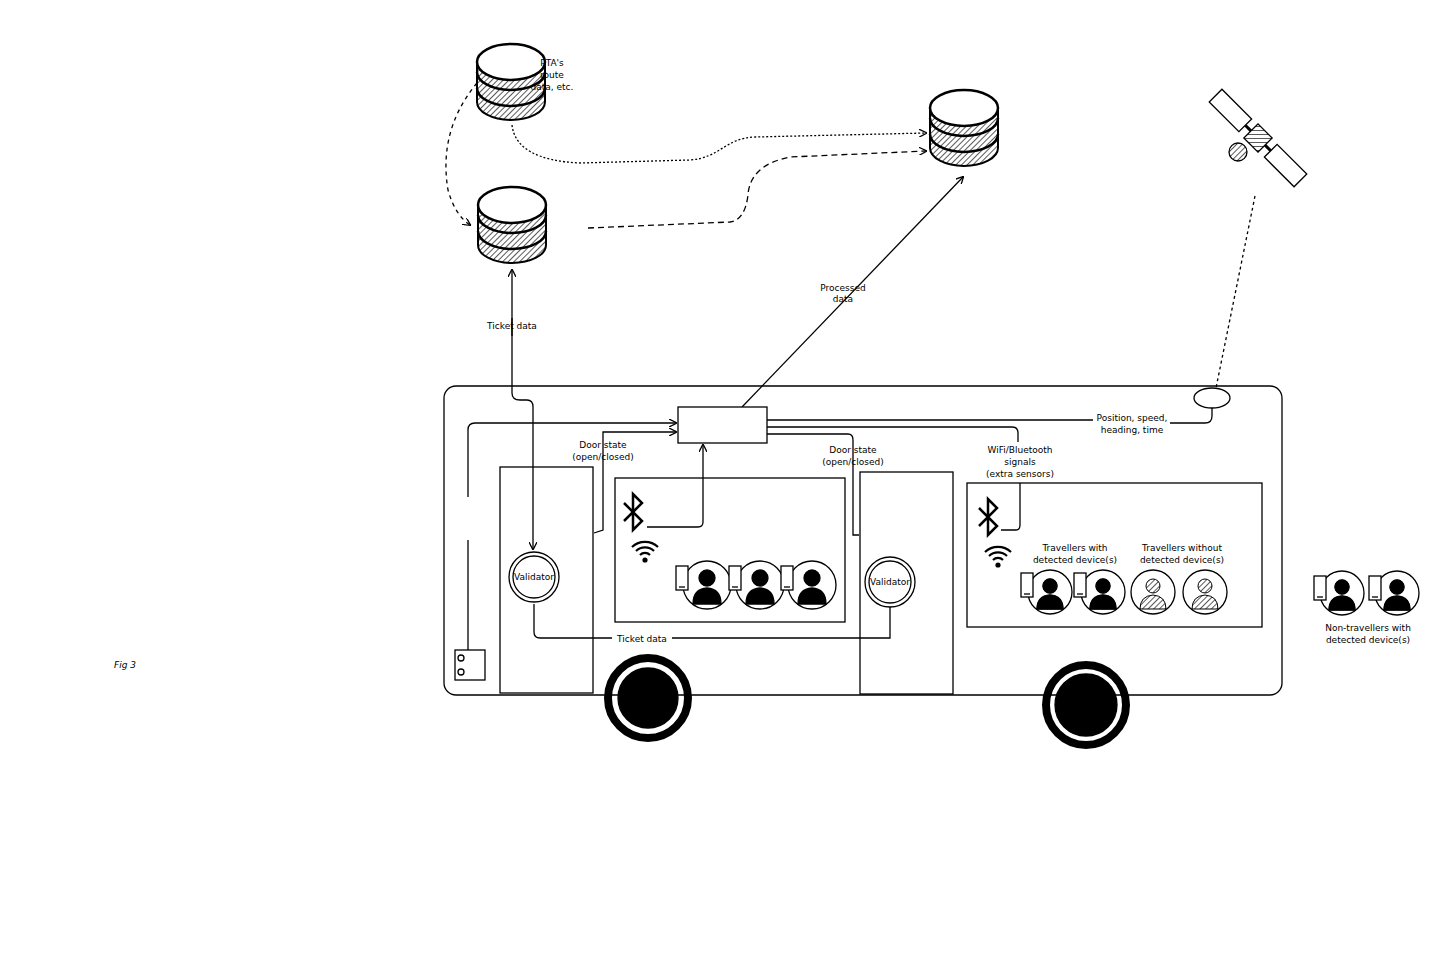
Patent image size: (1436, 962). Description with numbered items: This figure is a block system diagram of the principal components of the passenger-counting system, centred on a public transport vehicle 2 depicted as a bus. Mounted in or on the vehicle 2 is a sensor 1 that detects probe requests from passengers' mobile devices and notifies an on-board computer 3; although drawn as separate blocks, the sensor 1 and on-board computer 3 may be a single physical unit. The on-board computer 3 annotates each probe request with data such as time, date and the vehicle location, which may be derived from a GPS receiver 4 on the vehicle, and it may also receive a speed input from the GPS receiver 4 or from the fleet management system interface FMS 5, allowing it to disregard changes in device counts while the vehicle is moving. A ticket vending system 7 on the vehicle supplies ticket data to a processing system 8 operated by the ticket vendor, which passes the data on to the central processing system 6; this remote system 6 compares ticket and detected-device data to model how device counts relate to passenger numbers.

The sensor 1 is at (647, 515).
The vehicle 2 is at (1297, 456).
The on-board computer 3 is at (681, 409).
The GPS receiver 4 is at (1232, 390).
The FMS 5 is at (470, 672).
The central processing system 6 is at (1005, 104).
The ticket vending system 7 is at (548, 550).
The processing system operated by the ticket vendor 8 is at (556, 197).